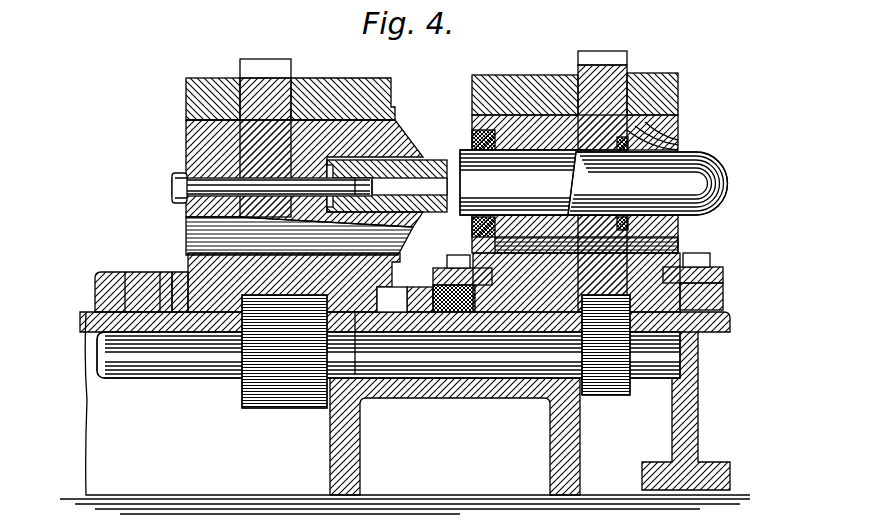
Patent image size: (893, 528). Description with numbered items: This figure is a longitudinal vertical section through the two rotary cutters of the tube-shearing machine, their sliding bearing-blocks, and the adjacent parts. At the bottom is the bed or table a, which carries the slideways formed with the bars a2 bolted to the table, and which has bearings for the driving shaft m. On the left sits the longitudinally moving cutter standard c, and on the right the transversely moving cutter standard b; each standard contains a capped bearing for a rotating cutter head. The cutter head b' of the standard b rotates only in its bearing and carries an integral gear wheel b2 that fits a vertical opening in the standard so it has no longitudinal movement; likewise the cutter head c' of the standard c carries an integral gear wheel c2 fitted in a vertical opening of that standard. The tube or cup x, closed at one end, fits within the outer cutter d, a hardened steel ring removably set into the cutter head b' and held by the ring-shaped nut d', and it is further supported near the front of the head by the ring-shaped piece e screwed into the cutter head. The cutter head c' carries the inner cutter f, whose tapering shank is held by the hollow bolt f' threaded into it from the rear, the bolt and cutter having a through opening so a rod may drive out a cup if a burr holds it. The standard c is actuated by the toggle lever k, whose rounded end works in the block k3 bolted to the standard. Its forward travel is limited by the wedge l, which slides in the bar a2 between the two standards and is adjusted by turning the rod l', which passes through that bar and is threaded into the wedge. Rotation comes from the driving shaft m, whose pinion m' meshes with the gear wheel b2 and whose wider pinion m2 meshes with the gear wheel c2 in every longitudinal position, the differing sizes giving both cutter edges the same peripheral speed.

The bed or table a is at (742, 318).
The bar a2 is at (735, 272).
The transversely moving cutter standard b is at (576, 179).
The gear wheel b2 is at (598, 65).
The cutter head b' is at (672, 131).
The longitudinally moving cutter standard c is at (281, 182).
The gear wheel c2 is at (265, 78).
The cutter head c' is at (271, 132).
The outer cutter d is at (464, 129).
The ring-shaped nut d' is at (463, 230).
The ring-shaped piece e is at (621, 150).
The inner cutter f is at (387, 175).
The bolt f' is at (254, 183).
The tube or cup x is at (525, 182).
The toggle lever k is at (140, 281).
The block k3 is at (168, 312).
The wedge l is at (395, 291).
The rod l' is at (402, 337).
The driving shaft m is at (388, 355).
The pinion m2 is at (265, 408).
The pinion m' is at (606, 364).